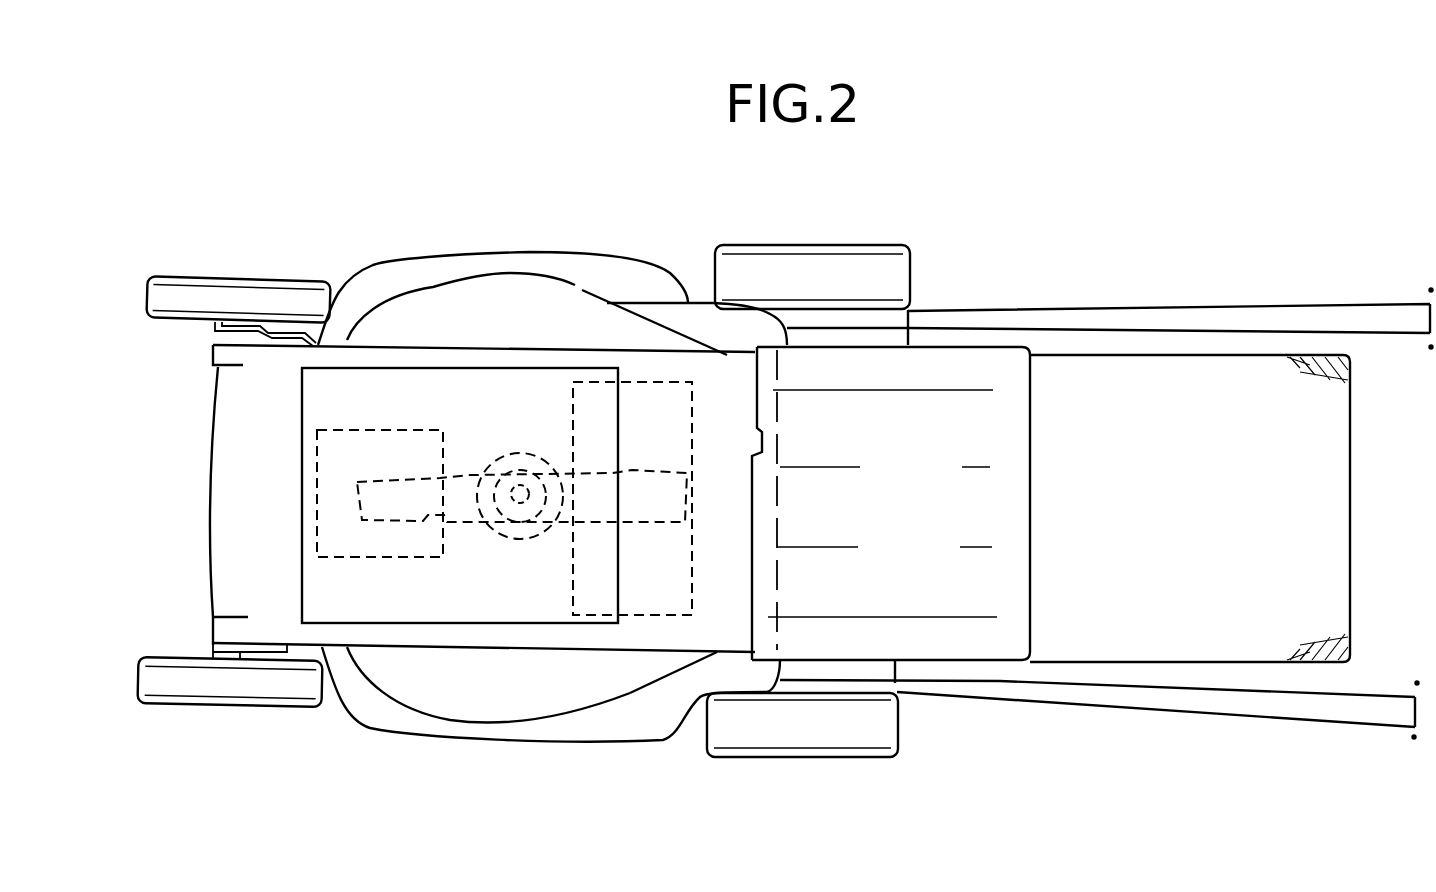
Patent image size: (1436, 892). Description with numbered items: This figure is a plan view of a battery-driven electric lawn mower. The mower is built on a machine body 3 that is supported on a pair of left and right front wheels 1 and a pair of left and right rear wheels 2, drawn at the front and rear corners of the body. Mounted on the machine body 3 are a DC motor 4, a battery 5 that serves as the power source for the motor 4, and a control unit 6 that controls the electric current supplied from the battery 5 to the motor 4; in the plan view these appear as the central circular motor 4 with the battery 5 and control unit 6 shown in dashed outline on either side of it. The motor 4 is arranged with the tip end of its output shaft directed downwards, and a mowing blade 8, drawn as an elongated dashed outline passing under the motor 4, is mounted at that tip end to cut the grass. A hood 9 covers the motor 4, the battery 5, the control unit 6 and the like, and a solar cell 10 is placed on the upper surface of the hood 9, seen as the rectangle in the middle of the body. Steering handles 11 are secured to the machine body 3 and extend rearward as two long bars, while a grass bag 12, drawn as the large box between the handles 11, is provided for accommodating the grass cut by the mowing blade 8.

The front wheels 1 is at (262, 297).
The rear wheels 2 is at (813, 268).
The machine body 3 is at (570, 305).
The DC motor 4 is at (520, 450).
The battery 5 is at (667, 444).
The control unit 6 is at (315, 475).
The mowing blade 8 is at (459, 503).
The hood 9 is at (476, 357).
The solar cell 10 is at (416, 387).
The steering handles 11 is at (1228, 318).
The grass bag 12 is at (1307, 513).